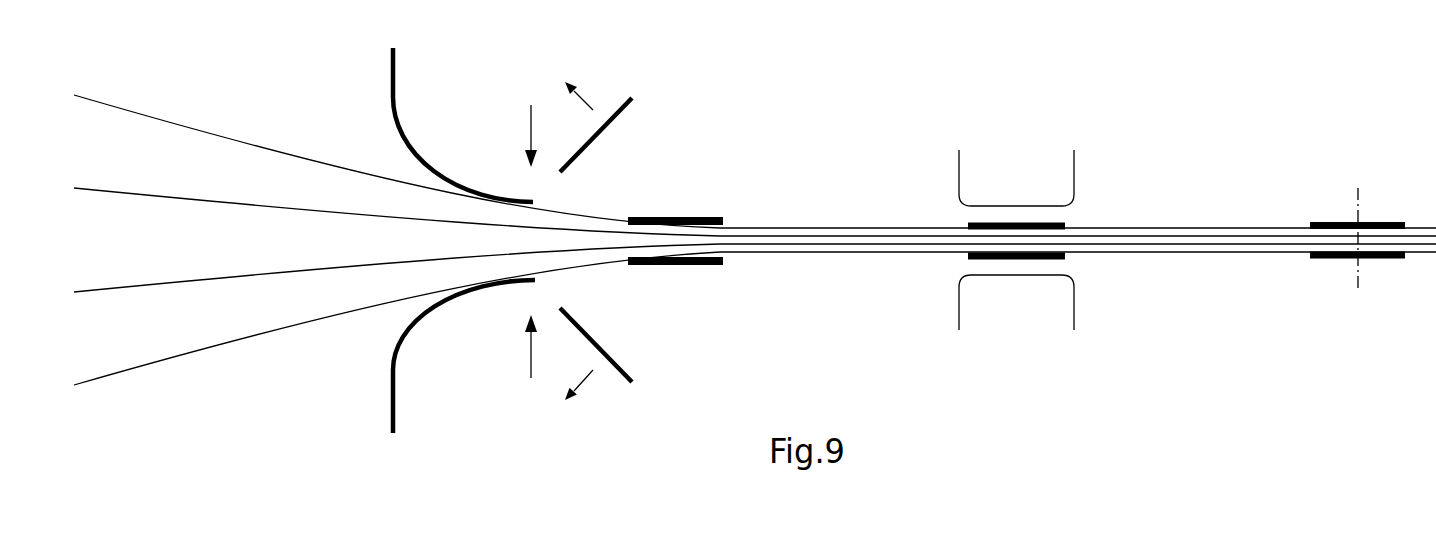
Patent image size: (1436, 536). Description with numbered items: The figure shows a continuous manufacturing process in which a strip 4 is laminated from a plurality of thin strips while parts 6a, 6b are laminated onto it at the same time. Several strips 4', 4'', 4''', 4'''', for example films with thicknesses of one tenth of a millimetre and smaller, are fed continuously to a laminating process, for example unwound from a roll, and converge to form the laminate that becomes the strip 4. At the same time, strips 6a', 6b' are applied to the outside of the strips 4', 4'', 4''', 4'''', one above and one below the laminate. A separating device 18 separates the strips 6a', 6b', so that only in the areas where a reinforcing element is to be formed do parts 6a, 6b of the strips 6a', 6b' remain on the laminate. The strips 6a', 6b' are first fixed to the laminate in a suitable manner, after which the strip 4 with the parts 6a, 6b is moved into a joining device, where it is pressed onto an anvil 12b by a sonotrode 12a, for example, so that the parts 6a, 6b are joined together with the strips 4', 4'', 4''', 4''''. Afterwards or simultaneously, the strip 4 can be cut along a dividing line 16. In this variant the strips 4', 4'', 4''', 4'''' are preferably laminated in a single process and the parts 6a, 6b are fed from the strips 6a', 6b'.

The strip 4 is at (1078, 191).
The strip 4' is at (397, 146).
The strip 4'' is at (397, 185).
The strip 4''' is at (397, 261).
The strip 4'''' is at (397, 318).
The part 6a is at (685, 192).
The part 6b is at (686, 296).
The strip 6a' is at (463, 125).
The strip 6b' is at (464, 356).
The sonotrode 12a is at (1065, 173).
The anvil 12b is at (1065, 308).
The dividing line 16 is at (1360, 200).
The separating device 18 is at (529, 125).